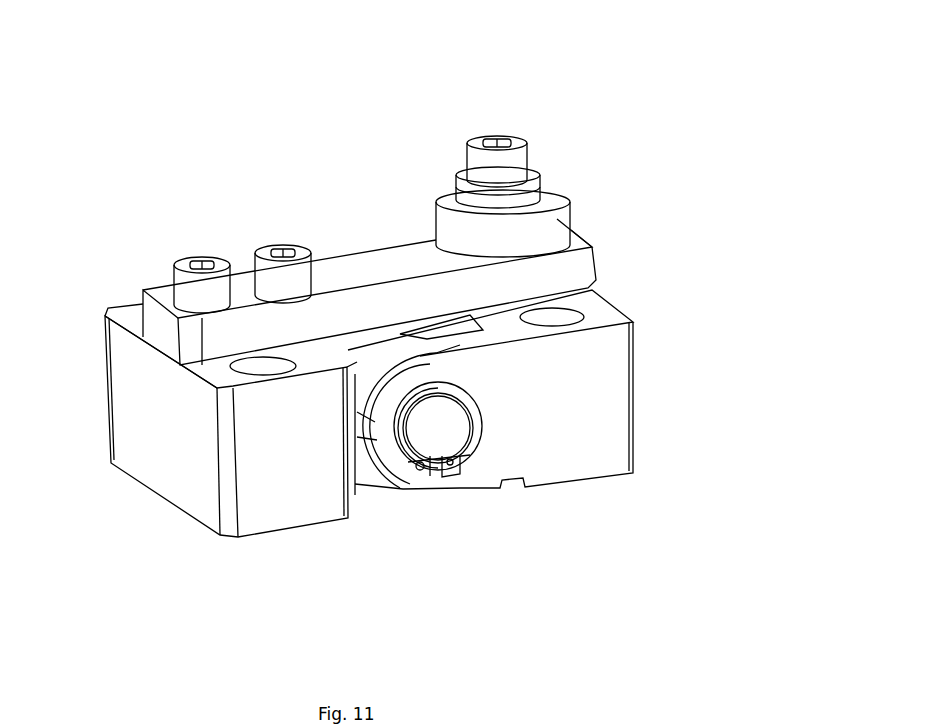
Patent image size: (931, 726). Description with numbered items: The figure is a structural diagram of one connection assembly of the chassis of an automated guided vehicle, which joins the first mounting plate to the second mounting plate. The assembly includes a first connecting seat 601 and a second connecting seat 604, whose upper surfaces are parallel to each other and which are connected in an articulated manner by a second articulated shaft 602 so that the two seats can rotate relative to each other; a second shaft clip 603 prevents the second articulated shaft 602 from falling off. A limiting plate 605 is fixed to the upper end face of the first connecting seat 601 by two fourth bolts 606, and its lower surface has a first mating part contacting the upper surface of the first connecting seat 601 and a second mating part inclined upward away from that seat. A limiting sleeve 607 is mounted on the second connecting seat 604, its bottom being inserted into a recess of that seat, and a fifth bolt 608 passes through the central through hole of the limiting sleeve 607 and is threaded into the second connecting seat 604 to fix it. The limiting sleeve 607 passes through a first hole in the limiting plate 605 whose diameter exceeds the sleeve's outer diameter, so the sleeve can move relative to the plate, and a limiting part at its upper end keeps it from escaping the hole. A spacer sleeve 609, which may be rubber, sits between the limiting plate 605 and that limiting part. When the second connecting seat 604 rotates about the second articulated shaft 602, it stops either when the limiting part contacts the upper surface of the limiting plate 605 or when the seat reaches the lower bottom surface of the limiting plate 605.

The first connecting seat 601 is at (279, 463).
The second articulated shaft 602 is at (435, 442).
The second shaft clip 603 is at (460, 460).
The second connecting seat 604 is at (577, 436).
The limiting plate 605 is at (166, 333).
The fourth bolts 606 is at (288, 278).
The limiting sleeve 607 is at (463, 193).
The fifth bolt 608 is at (498, 148).
The spacer sleeve 609 is at (447, 228).